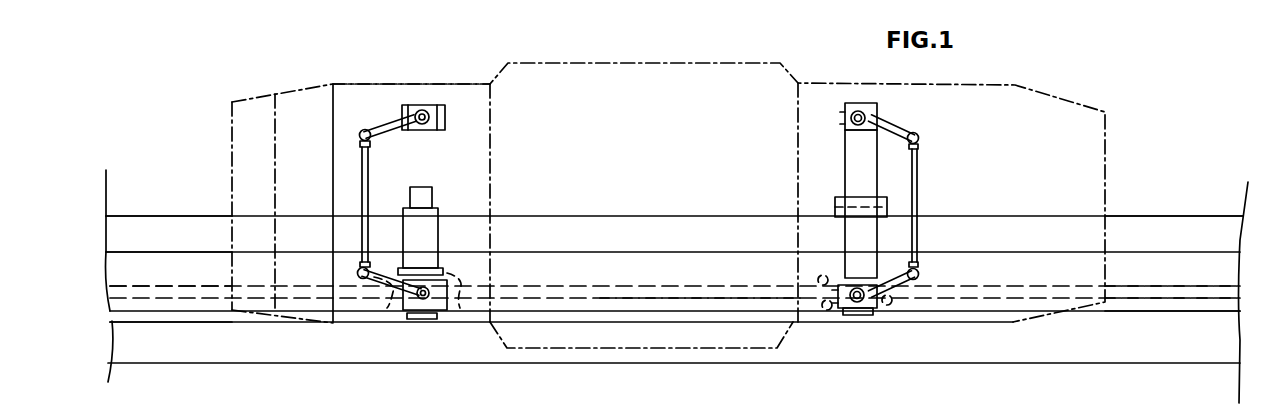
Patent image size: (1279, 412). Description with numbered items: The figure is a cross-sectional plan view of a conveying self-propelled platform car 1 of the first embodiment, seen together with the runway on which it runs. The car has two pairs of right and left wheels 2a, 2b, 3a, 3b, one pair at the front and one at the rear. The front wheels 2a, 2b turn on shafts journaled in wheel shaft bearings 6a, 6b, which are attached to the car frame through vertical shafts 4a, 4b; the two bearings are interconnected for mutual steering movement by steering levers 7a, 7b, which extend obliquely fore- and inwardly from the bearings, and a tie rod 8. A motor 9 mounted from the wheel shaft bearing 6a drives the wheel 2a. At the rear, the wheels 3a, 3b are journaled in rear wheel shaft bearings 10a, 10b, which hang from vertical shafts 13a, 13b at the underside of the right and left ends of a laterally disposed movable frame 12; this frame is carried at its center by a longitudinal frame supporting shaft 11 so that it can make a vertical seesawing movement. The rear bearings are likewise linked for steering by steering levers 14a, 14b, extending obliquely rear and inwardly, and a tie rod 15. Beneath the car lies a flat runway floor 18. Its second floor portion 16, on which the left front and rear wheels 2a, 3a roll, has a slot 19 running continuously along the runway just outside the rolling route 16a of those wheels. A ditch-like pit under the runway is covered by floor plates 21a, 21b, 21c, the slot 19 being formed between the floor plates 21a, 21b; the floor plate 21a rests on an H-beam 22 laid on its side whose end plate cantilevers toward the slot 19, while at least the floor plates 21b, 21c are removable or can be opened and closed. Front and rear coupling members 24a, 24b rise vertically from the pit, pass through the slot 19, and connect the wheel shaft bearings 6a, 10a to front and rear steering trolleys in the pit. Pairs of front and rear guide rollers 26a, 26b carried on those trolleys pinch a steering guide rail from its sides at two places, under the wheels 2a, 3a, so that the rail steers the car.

The conveying self-propelled platform car 1 is at (811, 80).
The left front wheel 2a is at (437, 310).
The right front wheel 2b is at (445, 118).
The left rear wheel 3a is at (838, 305).
The left rear wheel 3b is at (845, 118).
The vertical shaft 4a is at (423, 298).
The vertical shaft 4b is at (420, 110).
The wheel shaft bearing 6a is at (443, 303).
The wheel shaft bearing 6b is at (430, 110).
The steering lever 7a is at (363, 285).
The steering lever 7b is at (365, 129).
The tie rod 8 is at (362, 177).
The motor 9 is at (418, 222).
The rear wheel shaft bearing 10a is at (867, 320).
The rear wheel shaft bearing 10b is at (872, 105).
The frame supporting shaft 11 is at (847, 193).
The movable frame 12 is at (857, 235).
The vertical shaft 13a is at (855, 317).
The vertical shaft 13b is at (857, 108).
The steering lever 14a is at (907, 285).
The steering lever 14b is at (890, 128).
The tie rod 15 is at (918, 203).
The second floor portion 16 is at (1228, 287).
The rolling route 16a is at (220, 290).
The runway floor 18 is at (1182, 211).
The slot 19 is at (1178, 318).
The floor plate 21a is at (141, 275).
The floor plate 21b is at (170, 335).
The floor plate 21c is at (172, 232).
The H-beam 22 is at (703, 295).
The front coupling member 24a is at (423, 316).
The rear coupling member 24b is at (850, 313).
The front guide rollers 26a is at (387, 303).
The rear guide rollers 26b is at (820, 295).